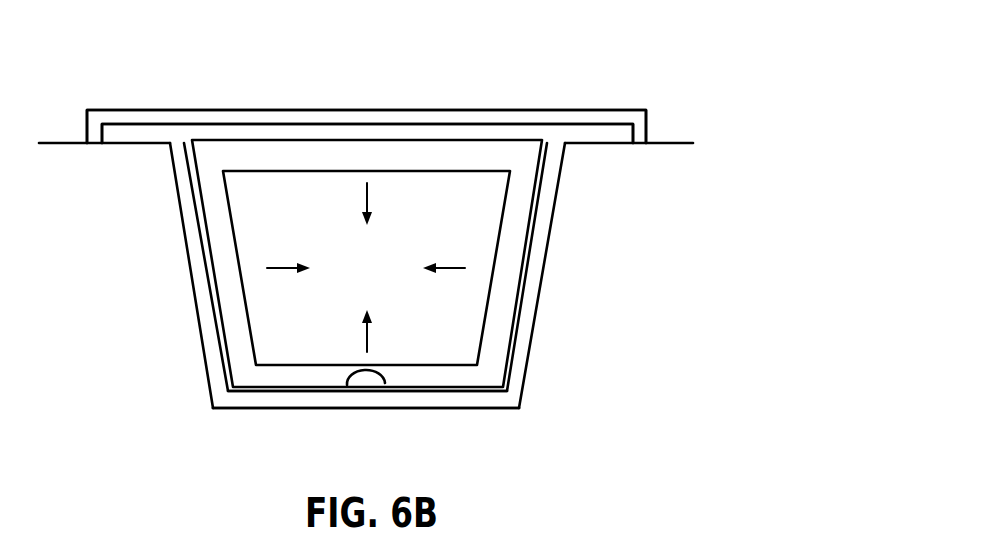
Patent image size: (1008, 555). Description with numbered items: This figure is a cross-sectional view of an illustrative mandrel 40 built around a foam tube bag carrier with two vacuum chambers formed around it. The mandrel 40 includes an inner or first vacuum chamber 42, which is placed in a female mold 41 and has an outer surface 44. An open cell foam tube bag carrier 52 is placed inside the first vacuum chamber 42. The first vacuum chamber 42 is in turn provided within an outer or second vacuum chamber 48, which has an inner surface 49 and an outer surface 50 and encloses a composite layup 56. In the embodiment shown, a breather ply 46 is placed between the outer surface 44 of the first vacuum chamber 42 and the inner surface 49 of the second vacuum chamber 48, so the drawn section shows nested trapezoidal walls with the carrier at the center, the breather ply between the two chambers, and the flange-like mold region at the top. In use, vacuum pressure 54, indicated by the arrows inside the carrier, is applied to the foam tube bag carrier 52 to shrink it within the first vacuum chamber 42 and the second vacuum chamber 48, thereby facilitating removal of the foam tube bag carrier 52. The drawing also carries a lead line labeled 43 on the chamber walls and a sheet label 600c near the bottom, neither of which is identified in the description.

The mandrel 40 is at (622, 94).
The female mold 41 is at (612, 146).
The first vacuum chamber 42 is at (524, 297).
The intermediate layer outer surface 43 is at (498, 257).
The outer surface 44 is at (347, 386).
The breather ply 46 is at (275, 386).
The second vacuum chamber 48 is at (495, 412).
The inner surface 49 is at (512, 336).
The outer surface 50 is at (365, 110).
The open cell foam tube bag carrier 52 is at (249, 257).
The vacuum pressure 54 is at (366, 195).
The composite layup 56 is at (137, 144).
The container 600c is at (613, 554).